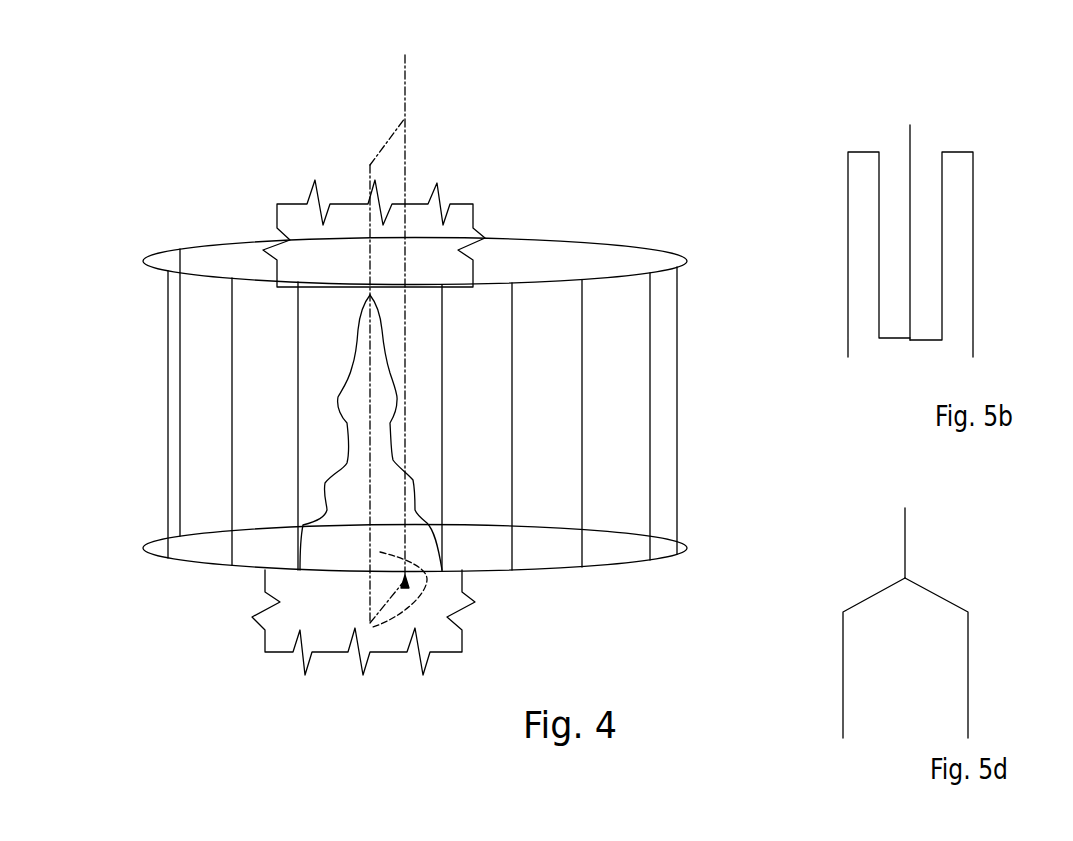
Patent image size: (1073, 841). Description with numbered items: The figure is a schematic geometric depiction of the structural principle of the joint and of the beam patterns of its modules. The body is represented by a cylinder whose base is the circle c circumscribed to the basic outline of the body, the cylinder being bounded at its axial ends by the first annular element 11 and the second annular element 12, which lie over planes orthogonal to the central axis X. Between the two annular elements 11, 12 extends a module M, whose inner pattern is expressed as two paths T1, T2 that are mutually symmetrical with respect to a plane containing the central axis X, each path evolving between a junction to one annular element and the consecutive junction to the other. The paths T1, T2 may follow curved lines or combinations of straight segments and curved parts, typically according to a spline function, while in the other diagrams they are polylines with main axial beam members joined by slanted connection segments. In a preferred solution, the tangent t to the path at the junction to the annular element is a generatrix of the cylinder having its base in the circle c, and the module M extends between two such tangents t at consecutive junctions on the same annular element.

In FIG. 4, the second annular element 12 is at (275, 205).
In FIG. 4, the first annular element 11 is at (449, 612).
In FIG. 4, the central axis X is at (405, 168).
In FIG. 4, the circle C is at (560, 240).
In FIG. 4, the module M is at (275, 432).
In FIG. 4, the tangent t is at (442, 367).
In FIG. 4, the first path T1 is at (347, 447).
In FIG. 5B, the first path T1 is at (848, 198).
In FIG. 5D, the first path T1 is at (862, 598).
In FIG. 4, the second path T2 is at (428, 432).
In FIG. 5B, the second path T2 is at (973, 217).
In FIG. 5D, the second path T2 is at (932, 590).